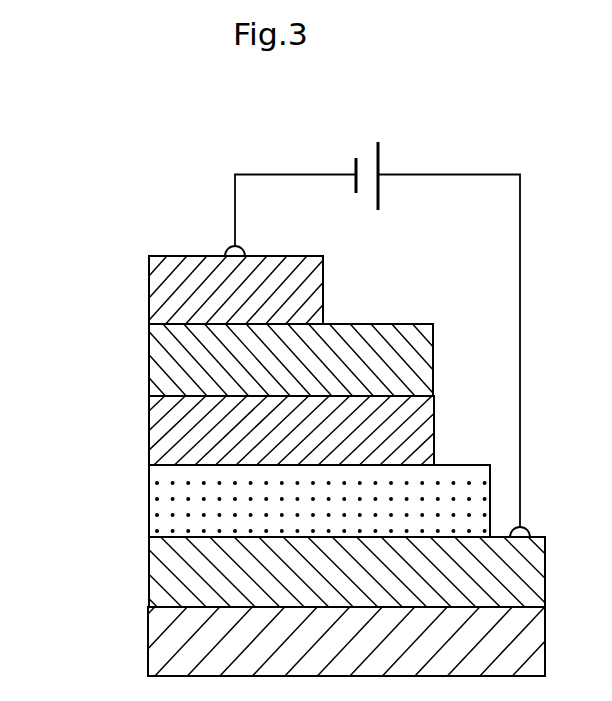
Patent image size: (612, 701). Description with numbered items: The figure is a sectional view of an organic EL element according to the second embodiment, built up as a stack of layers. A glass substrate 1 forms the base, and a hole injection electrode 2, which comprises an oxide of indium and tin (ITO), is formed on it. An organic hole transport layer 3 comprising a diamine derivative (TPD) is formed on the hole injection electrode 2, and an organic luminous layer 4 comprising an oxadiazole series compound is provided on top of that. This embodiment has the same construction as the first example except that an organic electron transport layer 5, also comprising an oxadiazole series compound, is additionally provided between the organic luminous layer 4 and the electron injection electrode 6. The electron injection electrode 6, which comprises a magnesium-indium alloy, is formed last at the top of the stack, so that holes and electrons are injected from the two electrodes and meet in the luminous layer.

The glass substrate 1 is at (165, 647).
The hole injection electrode 2 is at (165, 573).
The organic hole transport layer 3 is at (163, 510).
The organic luminous layer 4 is at (163, 440).
The organic electron transport layer 5 is at (163, 360).
The electron injection electrode 6 is at (163, 288).